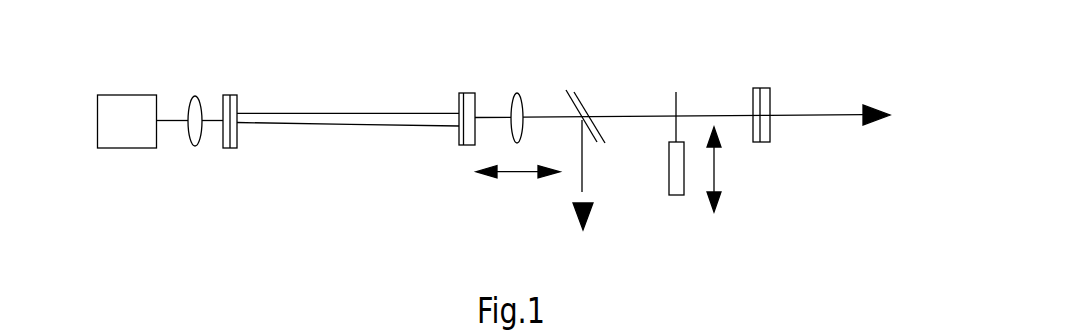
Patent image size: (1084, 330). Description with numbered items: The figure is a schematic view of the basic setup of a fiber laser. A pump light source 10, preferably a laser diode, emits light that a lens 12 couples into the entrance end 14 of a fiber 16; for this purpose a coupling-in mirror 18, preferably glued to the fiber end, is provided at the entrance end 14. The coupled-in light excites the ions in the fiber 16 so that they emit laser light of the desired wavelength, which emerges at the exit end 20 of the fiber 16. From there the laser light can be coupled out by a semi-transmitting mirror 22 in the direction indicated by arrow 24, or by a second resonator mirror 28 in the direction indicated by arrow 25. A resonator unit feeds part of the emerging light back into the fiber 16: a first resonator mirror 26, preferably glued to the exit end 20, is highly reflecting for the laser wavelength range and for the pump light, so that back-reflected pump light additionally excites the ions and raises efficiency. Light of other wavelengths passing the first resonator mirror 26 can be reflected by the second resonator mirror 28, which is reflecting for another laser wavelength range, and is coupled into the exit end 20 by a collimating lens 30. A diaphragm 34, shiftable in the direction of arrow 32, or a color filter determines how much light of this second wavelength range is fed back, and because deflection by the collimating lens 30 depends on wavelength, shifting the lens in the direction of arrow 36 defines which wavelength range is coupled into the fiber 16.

The pump light source 10 is at (110, 113).
The lens 12 is at (193, 99).
The entrance end 14 is at (243, 125).
The fiber 16 is at (335, 117).
The coupling-in mirror 18 is at (237, 100).
The exit end 20 is at (455, 119).
The semi-transmitting mirror 22 is at (585, 100).
The arrow 24 is at (585, 188).
The arrow 25 is at (807, 113).
The first resonator mirror 26 is at (460, 98).
The second resonator mirror 28 is at (763, 105).
The collimating lens 30 is at (515, 95).
The arrow 32 is at (715, 172).
The diaphragm 34 is at (677, 187).
The arrow 36 is at (510, 177).